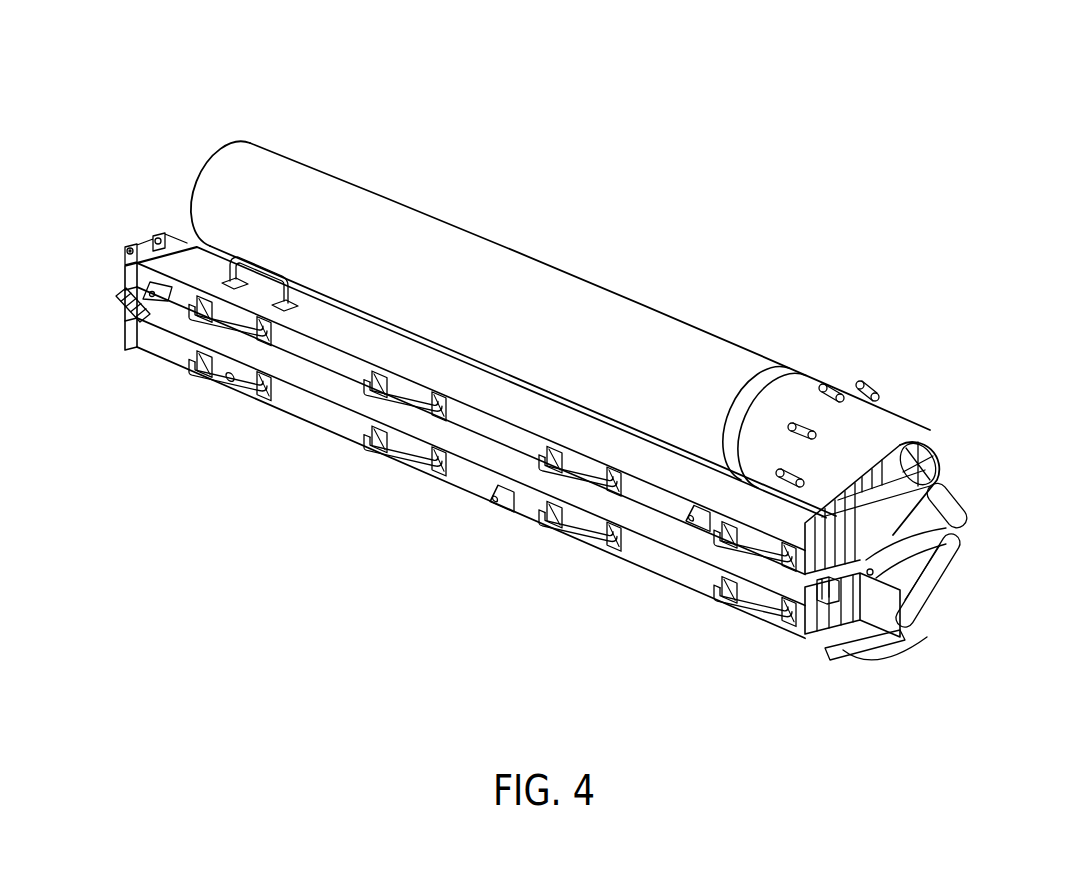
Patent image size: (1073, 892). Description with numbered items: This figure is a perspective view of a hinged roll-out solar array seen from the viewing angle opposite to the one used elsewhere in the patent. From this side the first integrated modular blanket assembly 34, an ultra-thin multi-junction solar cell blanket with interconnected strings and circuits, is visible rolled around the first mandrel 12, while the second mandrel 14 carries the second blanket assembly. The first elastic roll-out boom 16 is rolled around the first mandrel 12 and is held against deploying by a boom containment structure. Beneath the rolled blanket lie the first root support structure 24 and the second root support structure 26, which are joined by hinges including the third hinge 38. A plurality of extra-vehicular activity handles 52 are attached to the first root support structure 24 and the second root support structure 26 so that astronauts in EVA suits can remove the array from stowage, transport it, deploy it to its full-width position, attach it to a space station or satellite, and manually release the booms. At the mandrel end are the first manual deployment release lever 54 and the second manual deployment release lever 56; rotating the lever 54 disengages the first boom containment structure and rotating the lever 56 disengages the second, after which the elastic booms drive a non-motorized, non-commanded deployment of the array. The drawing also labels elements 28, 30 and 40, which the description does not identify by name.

The first mandrel 12 is at (947, 440).
The second mandrel 14 is at (920, 637).
The first elastic roll-out boom 16 is at (783, 393).
The first root support structure 24 is at (127, 320).
The second root support structure 26 is at (167, 352).
The upper rail 28 is at (219, 158).
The clevis plate 30 is at (157, 238).
The first integrated modular blanket assembly (IMBA) 34 is at (552, 283).
The third hinge 38 is at (128, 297).
The fastener 40 is at (128, 250).
The extra-vehicular activity (EVA) handles 52 is at (565, 530).
The first manual deployment release lever 54 is at (787, 567).
The second manual deployment release lever 56 is at (845, 650).